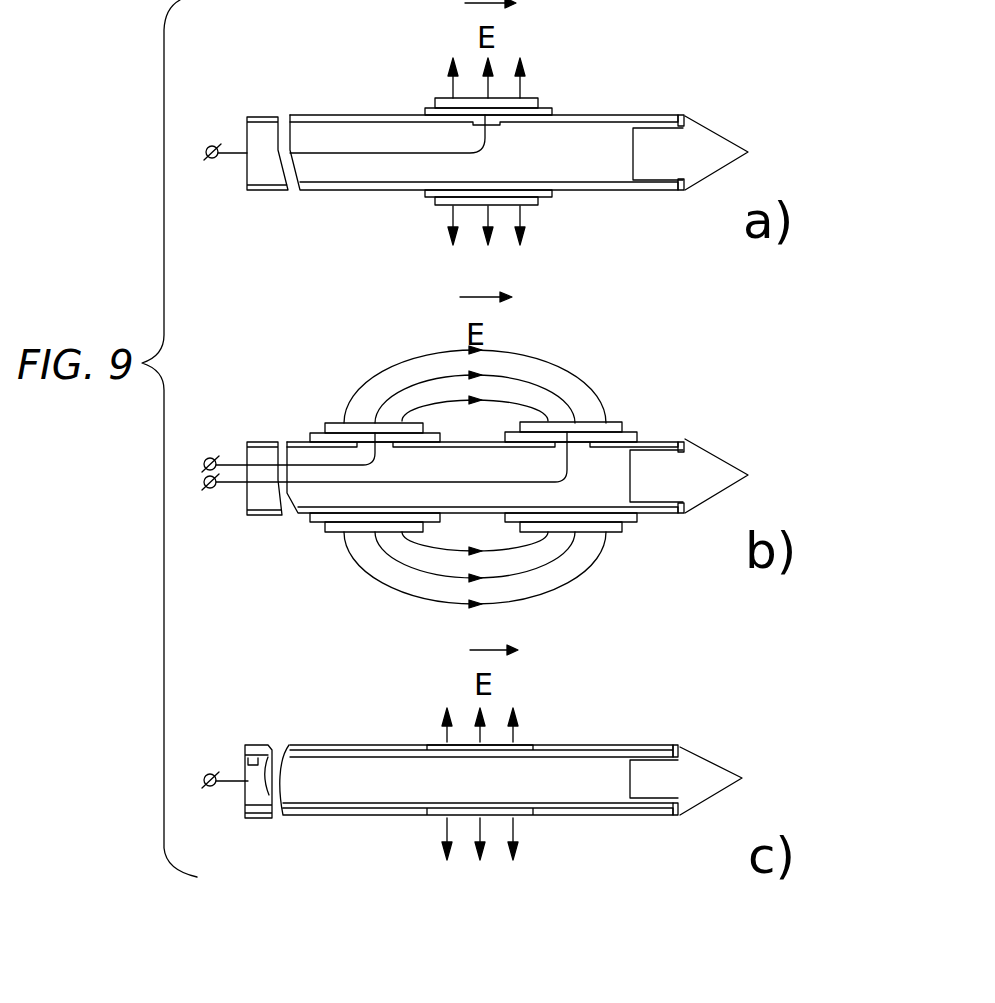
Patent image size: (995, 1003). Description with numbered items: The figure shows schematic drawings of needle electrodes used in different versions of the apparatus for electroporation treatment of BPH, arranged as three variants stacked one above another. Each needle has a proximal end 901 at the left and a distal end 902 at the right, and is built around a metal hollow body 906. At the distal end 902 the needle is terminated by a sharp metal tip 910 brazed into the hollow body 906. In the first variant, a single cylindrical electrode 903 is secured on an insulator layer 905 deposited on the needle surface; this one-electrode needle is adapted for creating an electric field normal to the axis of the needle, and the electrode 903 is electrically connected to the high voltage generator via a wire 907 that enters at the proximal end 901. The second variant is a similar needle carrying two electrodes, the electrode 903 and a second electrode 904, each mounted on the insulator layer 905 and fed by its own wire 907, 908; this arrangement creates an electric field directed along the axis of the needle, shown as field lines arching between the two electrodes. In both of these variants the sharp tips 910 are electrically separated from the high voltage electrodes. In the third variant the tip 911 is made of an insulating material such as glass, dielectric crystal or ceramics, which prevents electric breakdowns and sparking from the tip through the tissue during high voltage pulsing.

The proximal end 901 is at (262, 110).
The distal end 902 is at (685, 95).
The cylindrical electrode 903 is at (525, 98).
The electrode 904 is at (610, 418).
The insulator layer 905 is at (425, 108).
The metal hollow body 906 is at (402, 190).
The wire 907 is at (235, 153).
The wire 908 is at (228, 488).
The sharp metal tip 910 is at (708, 150).
The sharp tip 911 is at (703, 773).